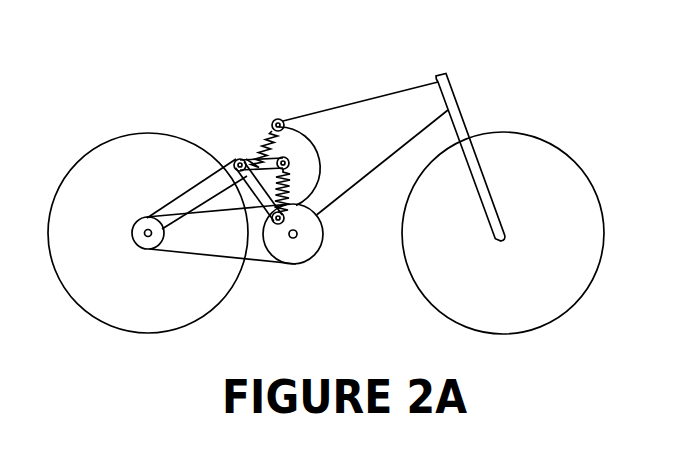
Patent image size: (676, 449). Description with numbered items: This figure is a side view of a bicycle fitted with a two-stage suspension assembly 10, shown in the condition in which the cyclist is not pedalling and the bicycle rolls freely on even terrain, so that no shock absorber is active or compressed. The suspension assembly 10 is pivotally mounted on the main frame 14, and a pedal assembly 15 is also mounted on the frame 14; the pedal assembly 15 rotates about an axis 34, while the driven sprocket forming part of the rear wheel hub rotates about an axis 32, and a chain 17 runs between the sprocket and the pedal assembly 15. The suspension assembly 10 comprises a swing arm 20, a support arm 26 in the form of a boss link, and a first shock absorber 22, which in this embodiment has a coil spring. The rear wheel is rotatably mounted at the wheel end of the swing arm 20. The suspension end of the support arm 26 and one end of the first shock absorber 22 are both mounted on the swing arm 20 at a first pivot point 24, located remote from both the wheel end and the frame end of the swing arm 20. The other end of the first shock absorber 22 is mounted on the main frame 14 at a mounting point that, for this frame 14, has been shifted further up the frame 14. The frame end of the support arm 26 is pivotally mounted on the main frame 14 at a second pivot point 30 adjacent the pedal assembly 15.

The two-stage suspension assembly 10 is at (112, 59).
The main frame 14 is at (383, 108).
The pedal assembly 15 is at (330, 257).
The chain 17 is at (203, 213).
The swing arm 20 is at (198, 197).
The first shock absorber 22 is at (262, 135).
The first pivot point 24 is at (238, 156).
The support arm 26 is at (258, 178).
The second pivot point 30 is at (284, 216).
The axis of rotation of sprocket 32 is at (147, 234).
The axis of rotation of pedal assembly 34 is at (295, 239).